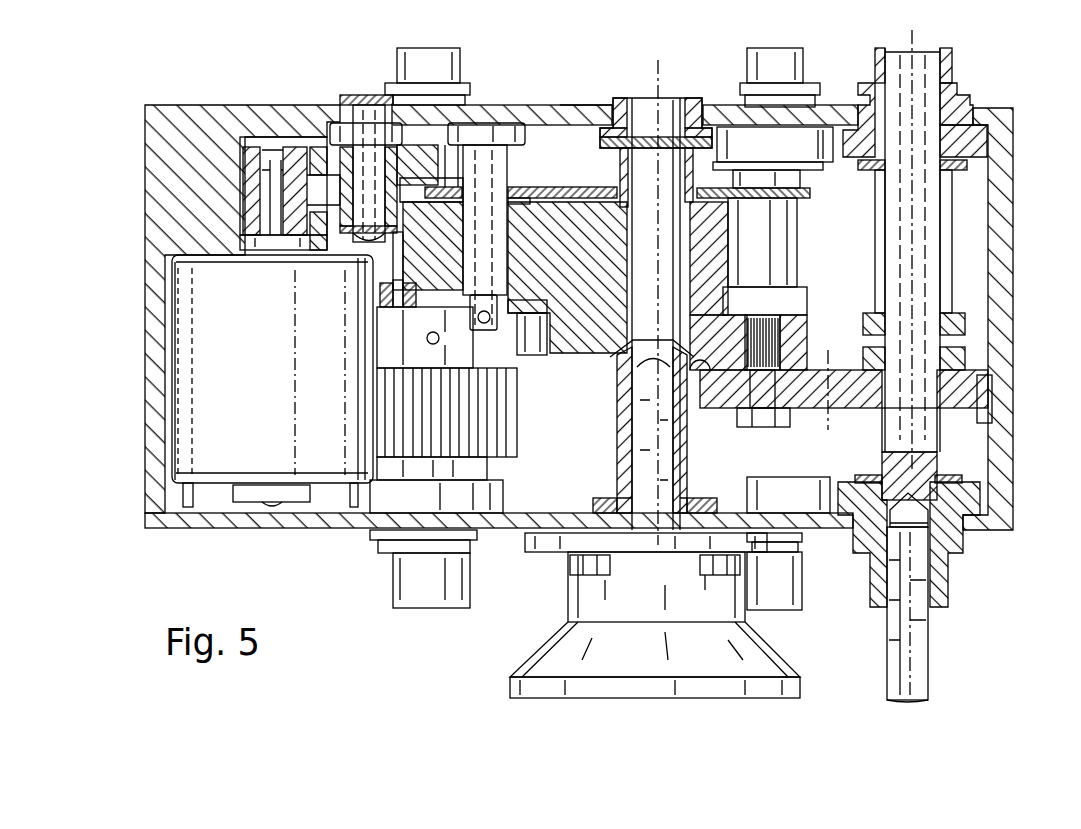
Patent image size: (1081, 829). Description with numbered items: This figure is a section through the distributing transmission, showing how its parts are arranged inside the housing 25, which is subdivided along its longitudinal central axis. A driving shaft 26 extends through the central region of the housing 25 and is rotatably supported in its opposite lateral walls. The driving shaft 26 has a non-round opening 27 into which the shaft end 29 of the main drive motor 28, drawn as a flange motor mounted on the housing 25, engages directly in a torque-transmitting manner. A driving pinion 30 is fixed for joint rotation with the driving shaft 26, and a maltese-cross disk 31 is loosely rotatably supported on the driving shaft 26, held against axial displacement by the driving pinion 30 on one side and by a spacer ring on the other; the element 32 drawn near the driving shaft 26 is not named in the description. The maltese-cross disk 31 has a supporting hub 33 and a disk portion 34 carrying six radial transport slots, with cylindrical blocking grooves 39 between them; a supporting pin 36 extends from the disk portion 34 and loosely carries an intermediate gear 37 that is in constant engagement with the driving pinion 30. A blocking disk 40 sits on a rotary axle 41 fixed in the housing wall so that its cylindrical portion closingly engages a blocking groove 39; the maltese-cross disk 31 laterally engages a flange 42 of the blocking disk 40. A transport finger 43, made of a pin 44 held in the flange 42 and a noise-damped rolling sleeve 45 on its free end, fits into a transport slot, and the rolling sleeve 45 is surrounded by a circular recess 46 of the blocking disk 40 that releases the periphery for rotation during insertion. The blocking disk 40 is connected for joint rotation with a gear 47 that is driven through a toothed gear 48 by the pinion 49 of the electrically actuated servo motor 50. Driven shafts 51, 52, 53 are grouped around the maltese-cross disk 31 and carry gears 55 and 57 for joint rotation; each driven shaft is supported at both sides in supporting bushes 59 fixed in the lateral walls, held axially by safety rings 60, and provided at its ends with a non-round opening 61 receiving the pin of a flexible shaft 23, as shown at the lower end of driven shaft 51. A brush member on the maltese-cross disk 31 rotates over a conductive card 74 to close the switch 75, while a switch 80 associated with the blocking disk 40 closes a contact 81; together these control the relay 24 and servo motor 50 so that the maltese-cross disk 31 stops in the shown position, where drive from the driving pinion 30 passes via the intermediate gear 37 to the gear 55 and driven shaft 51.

The flexible shaft 23 is at (907, 663).
The relay 24 is at (598, 103).
The housing 25 is at (153, 415).
The driving shaft 26 is at (631, 196).
The non-round opening 27 is at (617, 357).
The main drive motor 28 is at (510, 692).
The shaft end 29 is at (640, 500).
The driving pinion 30 is at (618, 412).
The maltese-cross disk 31 is at (753, 282).
The spindle column 32 is at (670, 140).
The supporting hub 33 is at (740, 220).
The disk portion 34 is at (810, 300).
The supporting pin 36 is at (758, 403).
The intermediate gear 37 is at (815, 370).
The blocking groove 39 is at (523, 337).
The blocking disk 40 is at (512, 302).
The rotary axle 41 is at (483, 160).
The flange 42 is at (573, 270).
The transport finger 43 is at (390, 290).
The pin 44 is at (397, 267).
The rolling sleeve 45 is at (375, 305).
The circular recess 46 is at (450, 300).
The gear 47 is at (545, 203).
The toothed gear 48 is at (335, 188).
The pinion 49 is at (258, 180).
The servo motor 50 is at (221, 440).
The driven shaft 51 is at (922, 292).
The driven shaft 52 is at (785, 235).
The driven shaft 53 is at (428, 467).
The gear 55 is at (960, 400).
The gear 57 is at (407, 418).
The supporting bush 59 is at (398, 56).
The safety ring 60 is at (987, 155).
The non-round opening 61 is at (920, 510).
The conductive card 74 is at (797, 192).
The switch 75 is at (717, 203).
The switch 80 is at (440, 188).
The contact 81 is at (520, 187).